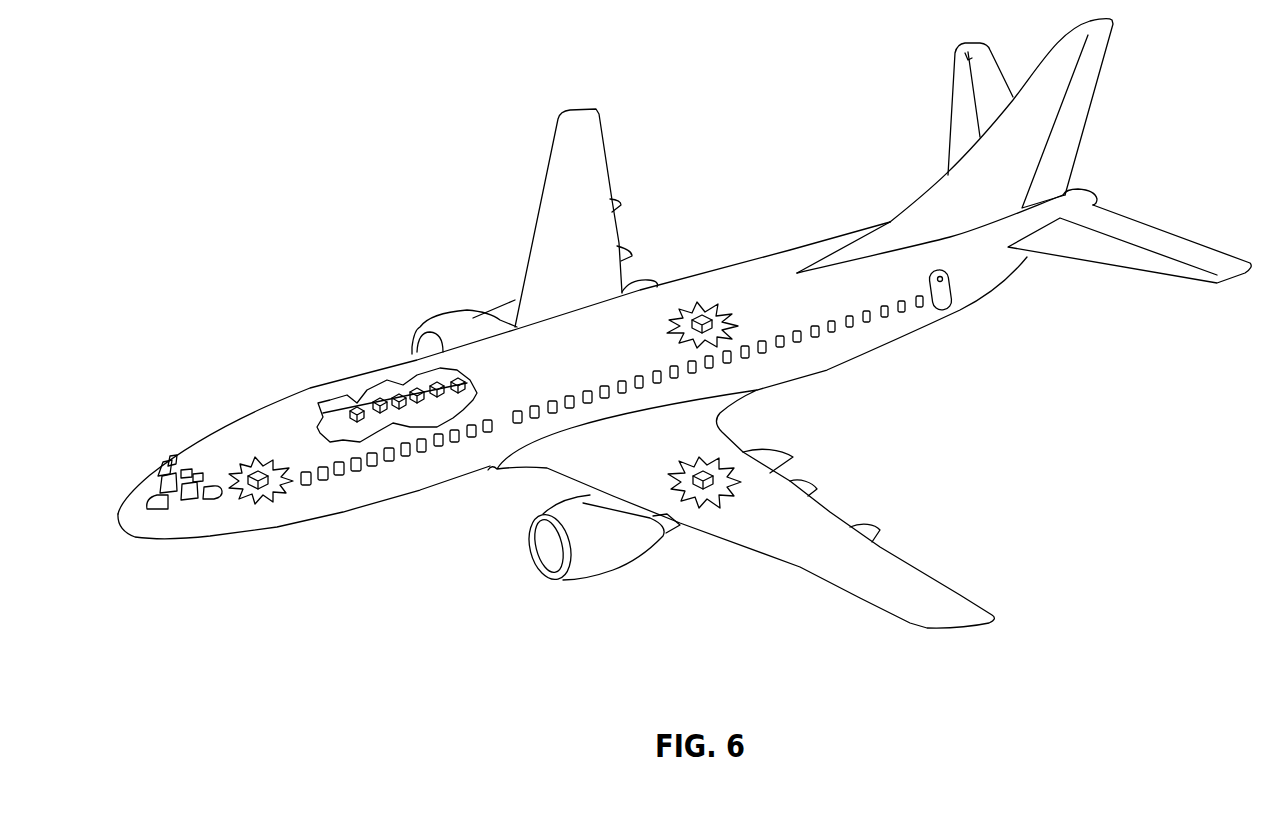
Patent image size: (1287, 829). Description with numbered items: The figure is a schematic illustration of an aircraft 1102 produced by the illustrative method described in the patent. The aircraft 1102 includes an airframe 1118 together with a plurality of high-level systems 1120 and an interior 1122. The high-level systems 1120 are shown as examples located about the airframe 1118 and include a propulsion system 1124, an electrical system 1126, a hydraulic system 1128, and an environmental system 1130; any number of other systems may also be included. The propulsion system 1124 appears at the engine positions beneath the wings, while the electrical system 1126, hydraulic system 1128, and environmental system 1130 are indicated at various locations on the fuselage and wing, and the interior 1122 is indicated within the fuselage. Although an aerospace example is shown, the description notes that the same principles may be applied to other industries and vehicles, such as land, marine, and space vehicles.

The aircraft 1102 is at (684, 327).
The airframe 1118 is at (358, 352).
The high-level systems 1120 is at (1023, 487).
The interior 1122 is at (388, 435).
The propulsion system 1124 is at (455, 317).
The electrical system 1126 is at (259, 458).
The hydraulic system 1128 is at (704, 460).
The environmental system 1130 is at (700, 318).